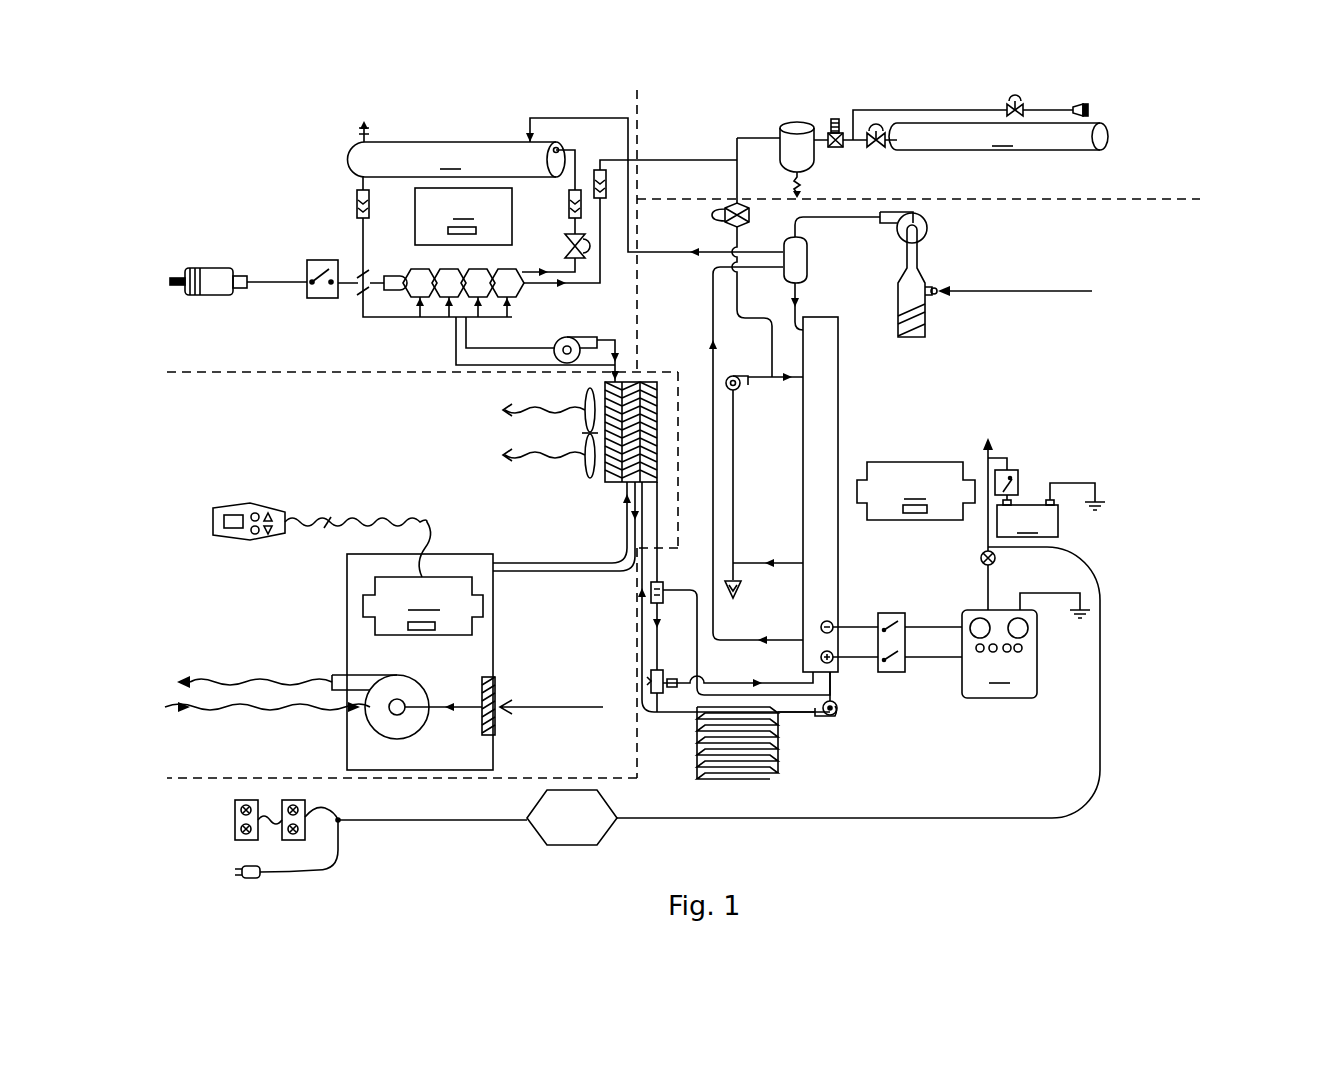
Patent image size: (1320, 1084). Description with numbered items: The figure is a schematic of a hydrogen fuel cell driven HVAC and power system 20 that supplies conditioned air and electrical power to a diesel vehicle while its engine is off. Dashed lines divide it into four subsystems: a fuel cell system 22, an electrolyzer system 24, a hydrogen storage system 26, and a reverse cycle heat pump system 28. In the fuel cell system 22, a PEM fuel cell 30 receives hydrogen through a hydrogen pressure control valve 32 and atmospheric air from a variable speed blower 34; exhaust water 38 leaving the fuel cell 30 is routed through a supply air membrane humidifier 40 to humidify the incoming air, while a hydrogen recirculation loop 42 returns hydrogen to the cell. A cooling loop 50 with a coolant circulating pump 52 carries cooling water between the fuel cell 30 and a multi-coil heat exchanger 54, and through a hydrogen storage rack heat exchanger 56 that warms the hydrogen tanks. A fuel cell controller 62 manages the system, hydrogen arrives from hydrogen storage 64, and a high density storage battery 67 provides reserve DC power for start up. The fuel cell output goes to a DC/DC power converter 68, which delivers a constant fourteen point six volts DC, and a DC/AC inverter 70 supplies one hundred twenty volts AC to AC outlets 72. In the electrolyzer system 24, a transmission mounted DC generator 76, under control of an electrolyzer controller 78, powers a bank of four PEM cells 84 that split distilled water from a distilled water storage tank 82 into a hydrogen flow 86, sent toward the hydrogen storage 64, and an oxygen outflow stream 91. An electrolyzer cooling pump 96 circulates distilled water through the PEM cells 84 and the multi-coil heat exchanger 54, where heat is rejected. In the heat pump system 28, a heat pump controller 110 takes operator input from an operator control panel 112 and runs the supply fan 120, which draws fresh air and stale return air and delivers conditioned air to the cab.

The hydrogen fuel cell driven HVAC and power system 20 is at (1130, 818).
The fuel cell system 22 is at (1108, 296).
The electrolyzer system 24 is at (233, 176).
The hydrogen storage system 26 is at (1182, 170).
The high efficiency reverse cycle heat pump system 28 is at (233, 440).
The proton exchange membrane fuel cell 30 is at (838, 369).
The hydrogen pressure control valve 32 is at (712, 215).
The variable speed blower 34 is at (927, 229).
The exhaust water 38 is at (742, 637).
The supply air membrane humidifier 40 is at (807, 262).
The hydrogen recirculation loop 42 is at (733, 484).
The cooling loop 50 is at (797, 720).
The coolant circulating pump 52 is at (837, 714).
The multi-coil heat exchanger 54 is at (613, 483).
The hydrogen storage rack heat exchanger 56 is at (735, 779).
The fuel cell controller 62 is at (916, 491).
The hydrogen storage 64 is at (961, 122).
The high density storage battery 67 is at (1046, 497).
The DC/DC power converter 68 is at (961, 545).
The DC/AC inverter 70 is at (613, 808).
The AC outlets 72 is at (235, 818).
The DC generator 76 is at (210, 268).
The electrolyzer controller 78 is at (463, 216).
The distilled water storage tank 82 is at (566, 178).
The PEM cells 84 is at (420, 268).
The hydrogen flow 86 is at (570, 284).
The oxygen outflow stream 91 is at (548, 272).
The electrolyzer cooling pump 96 is at (563, 337).
The heat pump controller 110 is at (423, 606).
The operator control panel 112 is at (265, 507).
The supply fan 120 is at (400, 738).